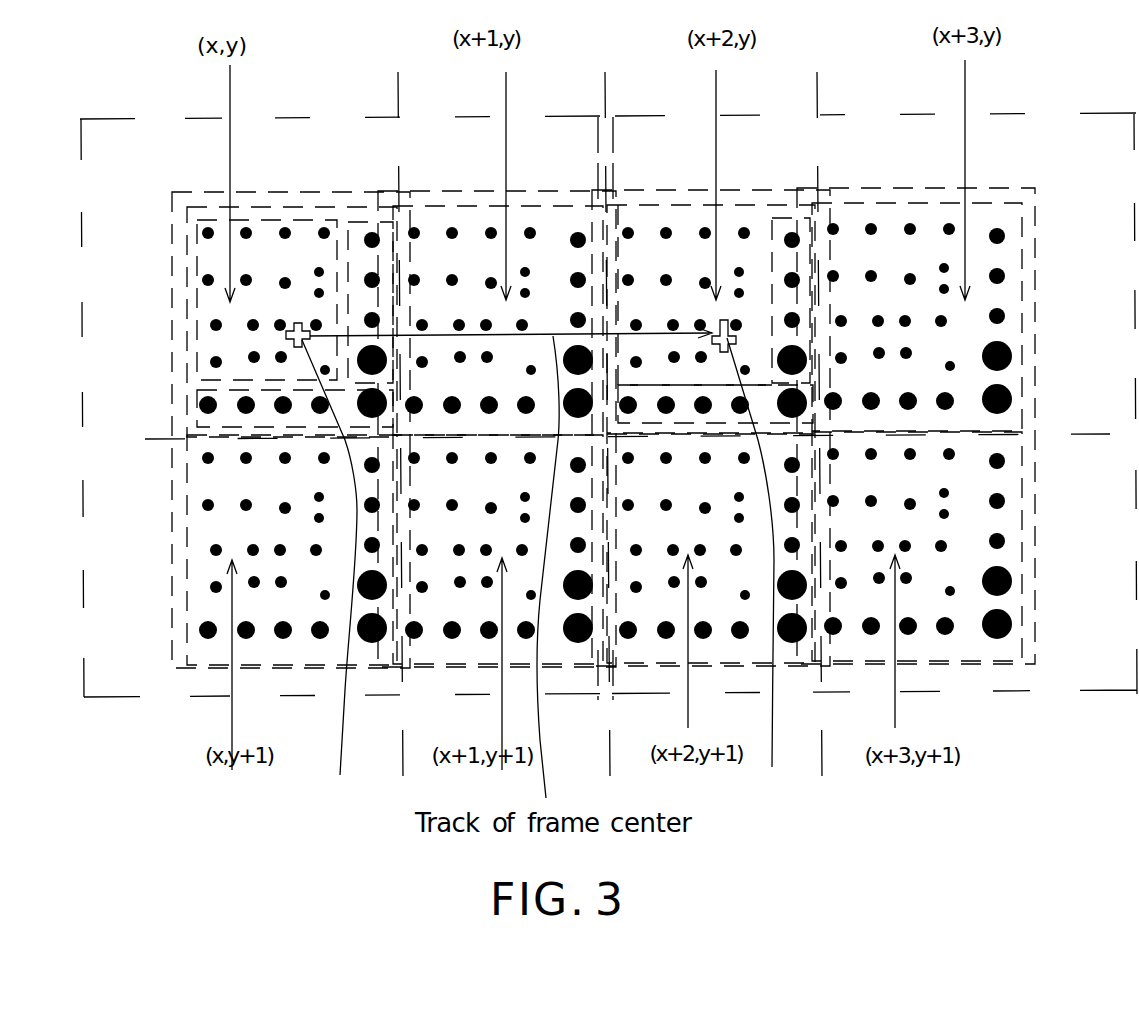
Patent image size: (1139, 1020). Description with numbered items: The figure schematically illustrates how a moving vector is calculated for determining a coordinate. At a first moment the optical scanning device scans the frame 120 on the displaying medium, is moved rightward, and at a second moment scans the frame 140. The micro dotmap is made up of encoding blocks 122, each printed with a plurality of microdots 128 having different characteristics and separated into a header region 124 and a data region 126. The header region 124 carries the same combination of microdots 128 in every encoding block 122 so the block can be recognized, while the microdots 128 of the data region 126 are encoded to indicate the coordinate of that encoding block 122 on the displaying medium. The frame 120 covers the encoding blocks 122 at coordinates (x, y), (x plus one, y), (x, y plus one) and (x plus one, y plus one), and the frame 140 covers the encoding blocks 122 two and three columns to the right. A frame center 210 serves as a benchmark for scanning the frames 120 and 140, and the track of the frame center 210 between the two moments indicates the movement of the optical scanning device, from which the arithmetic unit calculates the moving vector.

The frame 120 is at (293, 118).
The encoding block 122 is at (593, 435).
The header region 124 is at (674, 390).
The data region 126 is at (198, 343).
The microdot 128 is at (530, 434).
The frame 140 is at (820, 114).
The frame center 210 is at (547, 570).